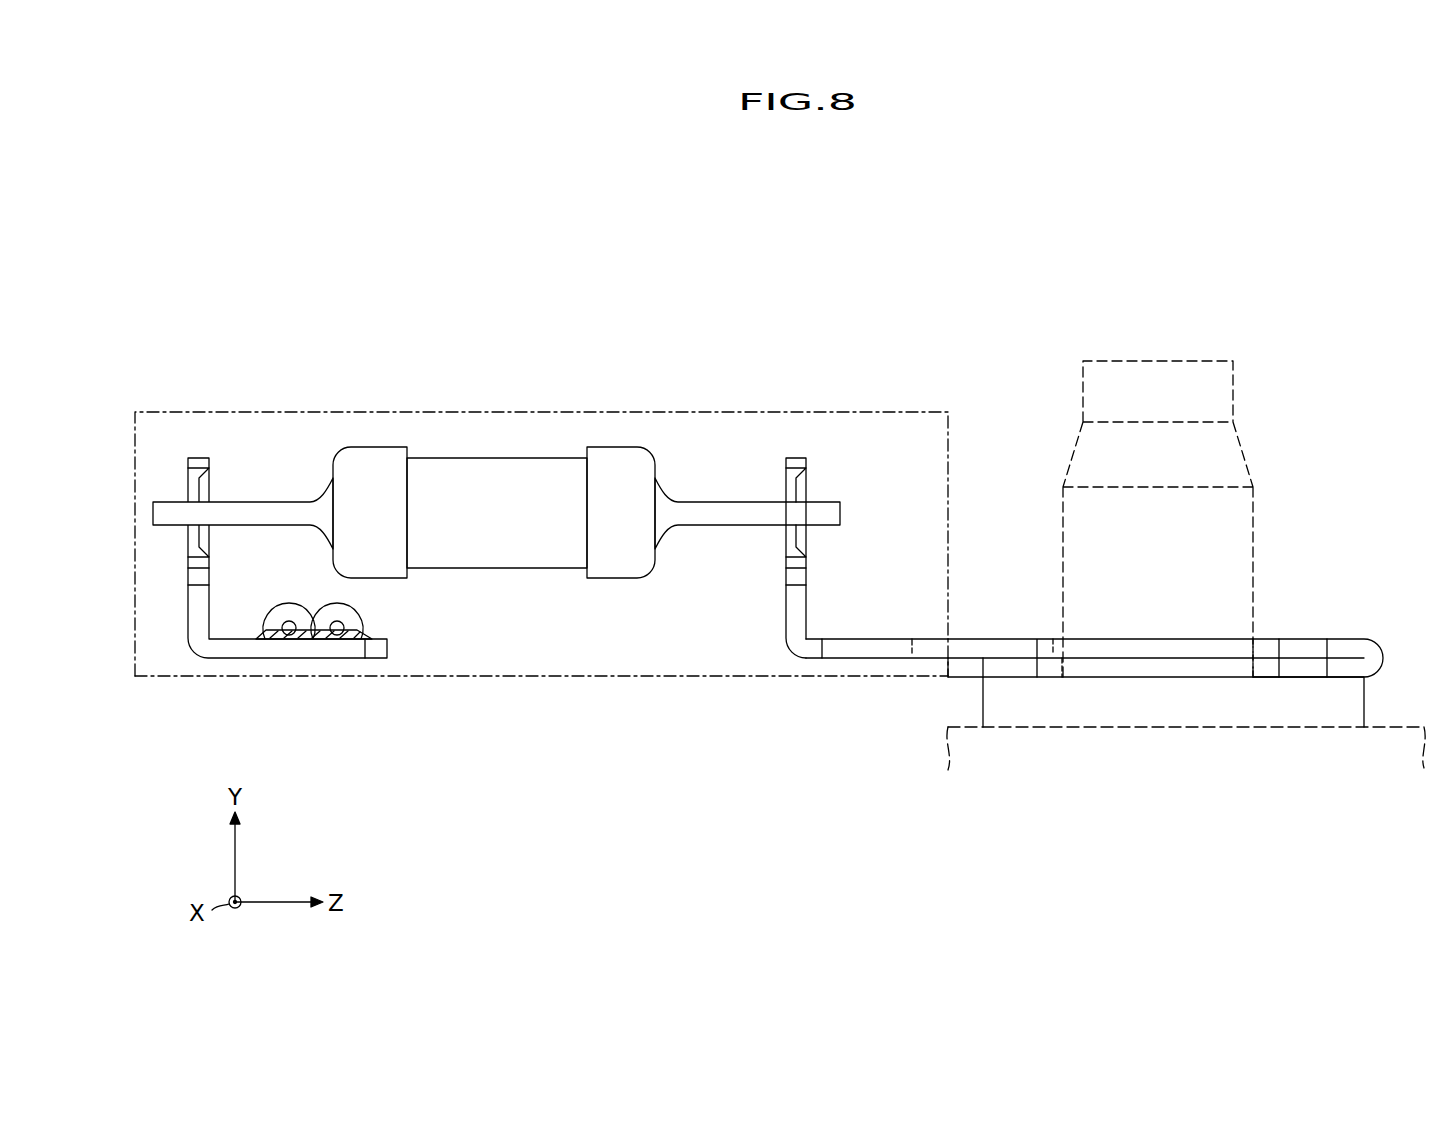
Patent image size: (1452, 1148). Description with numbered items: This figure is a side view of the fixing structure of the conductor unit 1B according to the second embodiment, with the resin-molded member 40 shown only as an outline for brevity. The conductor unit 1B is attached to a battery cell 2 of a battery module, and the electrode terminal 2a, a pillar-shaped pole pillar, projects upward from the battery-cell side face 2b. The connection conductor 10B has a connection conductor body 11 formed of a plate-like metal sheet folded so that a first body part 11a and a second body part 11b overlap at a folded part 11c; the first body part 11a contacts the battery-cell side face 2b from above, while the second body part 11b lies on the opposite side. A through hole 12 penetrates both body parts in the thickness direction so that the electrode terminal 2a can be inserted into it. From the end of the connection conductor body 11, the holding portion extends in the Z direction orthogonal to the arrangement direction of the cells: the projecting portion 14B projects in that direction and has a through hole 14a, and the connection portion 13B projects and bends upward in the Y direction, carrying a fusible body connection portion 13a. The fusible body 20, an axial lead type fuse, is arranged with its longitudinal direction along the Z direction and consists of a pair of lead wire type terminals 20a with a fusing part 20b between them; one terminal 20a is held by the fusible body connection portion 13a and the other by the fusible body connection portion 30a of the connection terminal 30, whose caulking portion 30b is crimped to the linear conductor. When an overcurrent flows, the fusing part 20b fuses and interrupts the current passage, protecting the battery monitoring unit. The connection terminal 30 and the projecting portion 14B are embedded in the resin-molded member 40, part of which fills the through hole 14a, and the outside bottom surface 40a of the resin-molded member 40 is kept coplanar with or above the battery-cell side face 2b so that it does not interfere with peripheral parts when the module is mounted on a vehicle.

The conductor unit 1B is at (738, 213).
The resin-molded member 40 is at (752, 410).
The outside bottom surface 40a is at (585, 690).
The connection terminal 30 is at (193, 658).
The fusible body connection portion 30a is at (200, 457).
The caulking portion 30b is at (350, 618).
The fusible body 20 is at (285, 352).
The terminals 20a is at (256, 500).
The fusing part 20b is at (487, 490).
The fusible body connection portion 13a is at (808, 484).
The connection portion 13B is at (808, 628).
The projecting portion 14B is at (806, 665).
The through hole 14a is at (842, 645).
The connection conductor 10B is at (1017, 597).
The battery-cell side face 2b is at (1008, 660).
The battery cell 2 is at (1374, 701).
The electrode terminal 2a is at (1236, 404).
The through hole 12 is at (1250, 650).
The connection conductor body 11 is at (1272, 567).
The first body part 11a is at (1312, 668).
The second body part 11b is at (1298, 650).
The folded part 11c is at (1378, 657).